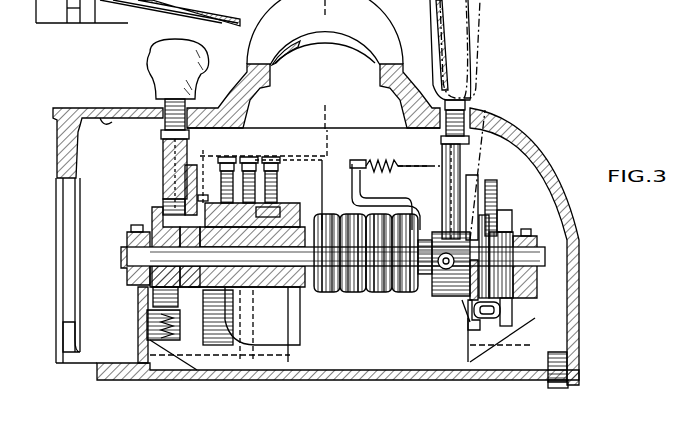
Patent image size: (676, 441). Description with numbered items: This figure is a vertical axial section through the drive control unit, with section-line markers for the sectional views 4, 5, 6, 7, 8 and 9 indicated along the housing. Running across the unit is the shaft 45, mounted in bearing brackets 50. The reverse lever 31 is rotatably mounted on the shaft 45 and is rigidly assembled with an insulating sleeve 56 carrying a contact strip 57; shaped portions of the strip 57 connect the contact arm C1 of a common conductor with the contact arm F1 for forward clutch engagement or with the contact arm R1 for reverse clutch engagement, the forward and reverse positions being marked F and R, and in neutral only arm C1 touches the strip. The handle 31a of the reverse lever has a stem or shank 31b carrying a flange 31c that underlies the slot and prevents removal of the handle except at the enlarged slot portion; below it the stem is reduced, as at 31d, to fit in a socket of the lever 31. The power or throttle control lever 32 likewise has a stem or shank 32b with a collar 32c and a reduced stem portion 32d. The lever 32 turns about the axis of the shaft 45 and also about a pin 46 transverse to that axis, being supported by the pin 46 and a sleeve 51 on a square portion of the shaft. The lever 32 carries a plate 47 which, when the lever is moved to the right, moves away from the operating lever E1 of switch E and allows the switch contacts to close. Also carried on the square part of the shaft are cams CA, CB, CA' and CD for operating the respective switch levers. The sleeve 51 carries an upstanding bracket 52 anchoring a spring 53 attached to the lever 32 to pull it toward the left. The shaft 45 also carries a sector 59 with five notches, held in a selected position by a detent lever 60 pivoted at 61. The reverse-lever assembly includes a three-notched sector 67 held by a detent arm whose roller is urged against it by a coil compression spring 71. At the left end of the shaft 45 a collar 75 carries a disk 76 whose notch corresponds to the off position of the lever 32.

The handle 31a is at (148, 61).
The stem or shank 31b is at (165, 110).
The flange 31c is at (161, 135).
The reverse lever 31 is at (163, 157).
The reduced stem portion 31d is at (163, 175).
The disk 76 is at (152, 214).
The collar 75 is at (172, 226).
The forward contact arm F1 is at (203, 197).
The forward position F is at (232, 154).
The reverse position R is at (252, 158).
The common conductor contact arm C1 is at (276, 182).
The reverse contact arm R1 is at (262, 198).
The contact strip 57 is at (300, 211).
The spring 53 is at (370, 162).
The bracket 52 is at (362, 188).
The collar 32c is at (441, 139).
The power or throttle control lever 32 is at (460, 162).
The reduced stem portion 32d is at (470, 187).
The stem or shank 32b is at (466, 50).
The sector 59 is at (497, 191).
The detent lever 60 is at (506, 227).
The shaft 45 is at (128, 262).
The bearing brackets 50 is at (97, 363).
The insulating sleeve 56 is at (272, 292).
The cam CA is at (322, 267).
The cam CB is at (353, 292).
The cam CA' is at (378, 267).
The cam CD is at (406, 292).
The pin 46 is at (438, 282).
The sleeve 51 is at (470, 285).
The plate 47 is at (467, 322).
The operating lever of switch E E1 is at (488, 316).
The coil compression spring 71 is at (147, 327).
The sector 67 is at (201, 366).
The pivot 61 is at (266, 78).
The section line 4- 4 is at (100, 257).
The section line 5- 5 is at (473, 330).
The section line 6- 6 is at (258, 300).
The section line 7- 7 is at (175, 70).
The section line 8- 8 is at (543, 93).
The section line 9- 9 is at (440, 300).